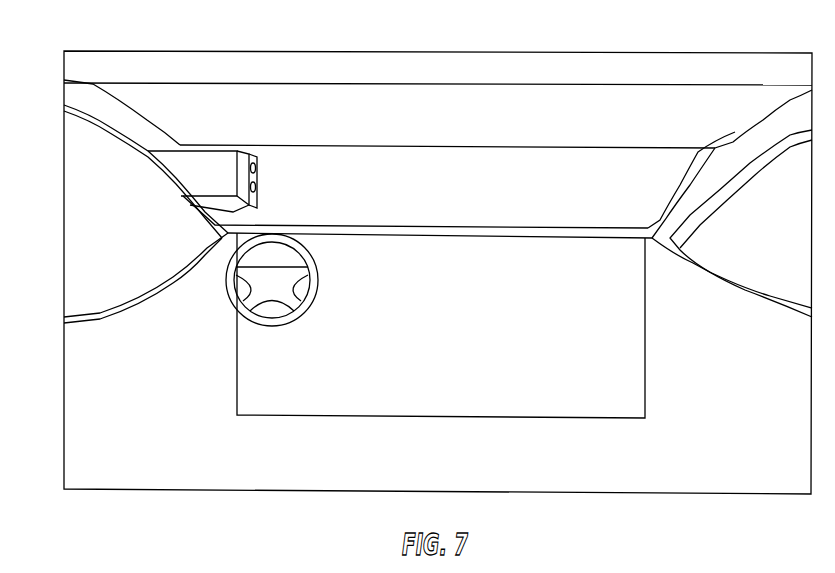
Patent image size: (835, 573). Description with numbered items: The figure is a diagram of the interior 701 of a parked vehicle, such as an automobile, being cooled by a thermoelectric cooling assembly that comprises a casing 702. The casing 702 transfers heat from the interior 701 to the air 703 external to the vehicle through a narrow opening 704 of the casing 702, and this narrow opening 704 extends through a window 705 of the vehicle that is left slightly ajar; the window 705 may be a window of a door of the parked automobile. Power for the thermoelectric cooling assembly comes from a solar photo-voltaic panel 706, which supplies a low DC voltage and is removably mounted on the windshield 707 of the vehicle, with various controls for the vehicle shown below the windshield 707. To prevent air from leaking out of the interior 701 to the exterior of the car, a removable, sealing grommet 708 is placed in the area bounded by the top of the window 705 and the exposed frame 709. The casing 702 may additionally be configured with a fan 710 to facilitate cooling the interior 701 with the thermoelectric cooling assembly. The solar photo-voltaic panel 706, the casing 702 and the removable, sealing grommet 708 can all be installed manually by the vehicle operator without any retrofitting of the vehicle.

The interior 701 is at (462, 122).
The casing 702 is at (230, 182).
The air 703 is at (52, 175).
The narrow opening 704 is at (134, 142).
The window 705 is at (140, 236).
The solar photo-voltaic panel 706 is at (462, 200).
The windshield 707 is at (688, 172).
The removable, sealing grommet 708 is at (88, 120).
The exposed frame 709 is at (113, 125).
The fan 710 is at (252, 160).